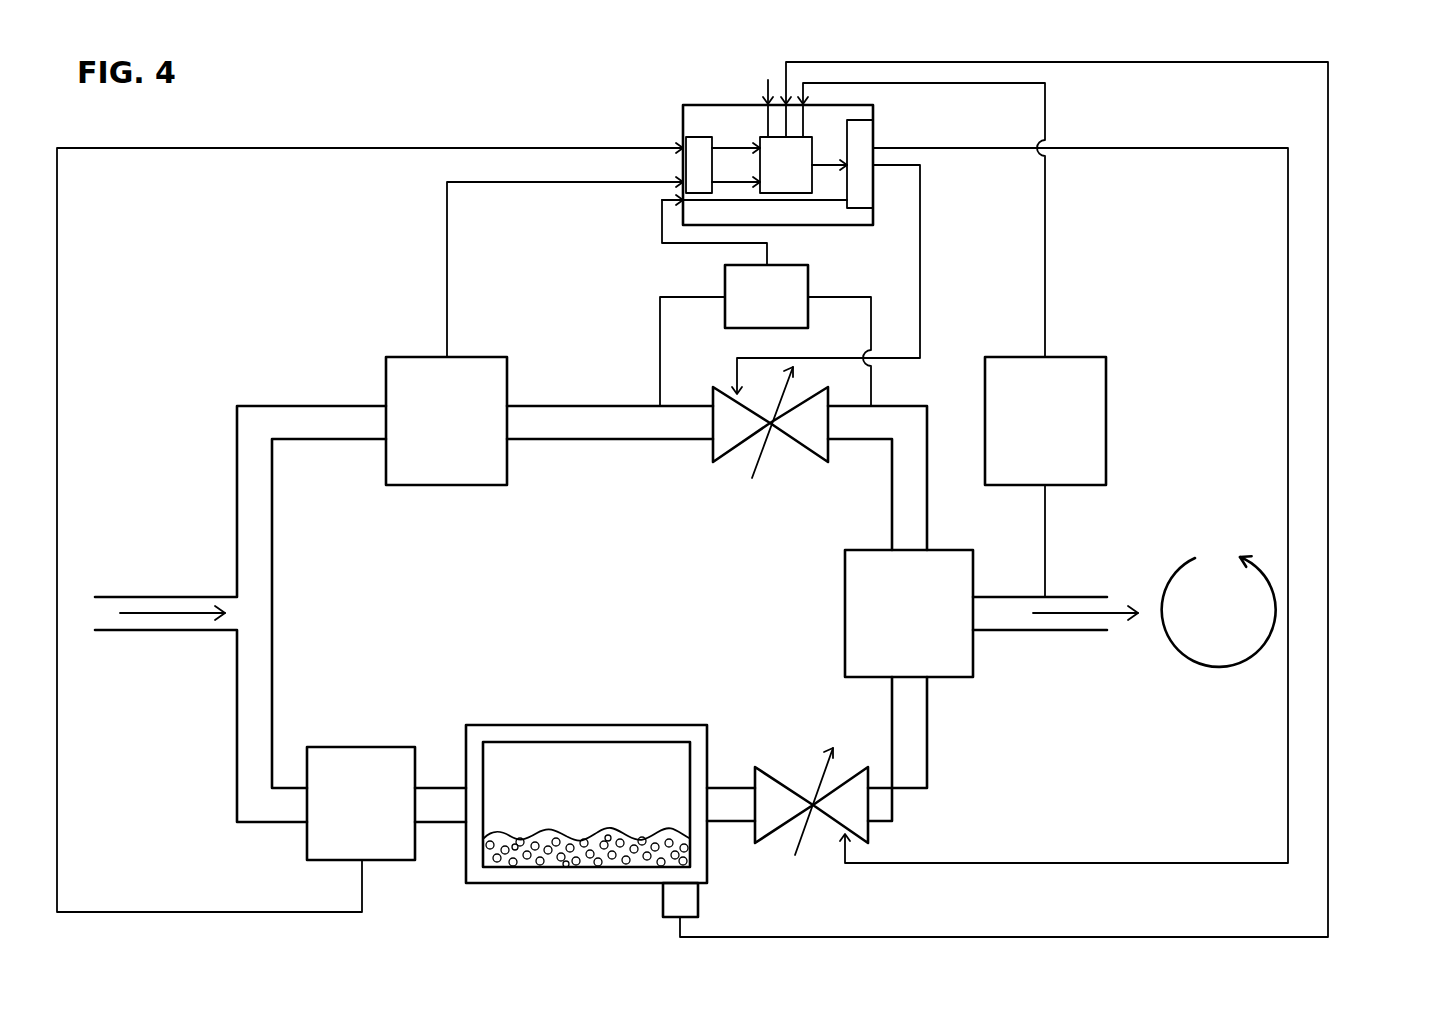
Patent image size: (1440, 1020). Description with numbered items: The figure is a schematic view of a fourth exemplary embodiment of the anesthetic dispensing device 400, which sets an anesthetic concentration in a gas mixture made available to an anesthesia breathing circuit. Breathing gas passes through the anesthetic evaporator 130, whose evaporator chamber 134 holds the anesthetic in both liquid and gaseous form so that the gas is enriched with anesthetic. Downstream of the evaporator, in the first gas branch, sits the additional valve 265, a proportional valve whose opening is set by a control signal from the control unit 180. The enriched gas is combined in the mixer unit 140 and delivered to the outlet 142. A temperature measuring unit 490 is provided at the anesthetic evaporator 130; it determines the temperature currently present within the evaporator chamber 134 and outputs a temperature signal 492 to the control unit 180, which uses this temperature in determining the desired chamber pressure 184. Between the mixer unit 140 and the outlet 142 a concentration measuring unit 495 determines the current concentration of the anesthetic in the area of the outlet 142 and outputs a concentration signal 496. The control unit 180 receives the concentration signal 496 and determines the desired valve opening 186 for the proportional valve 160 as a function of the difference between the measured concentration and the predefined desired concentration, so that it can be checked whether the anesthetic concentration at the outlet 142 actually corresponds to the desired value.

The anesthetic dispensing device 400 is at (743, 487).
The control unit 180 is at (806, 130).
The desired chamber pressure 184 is at (827, 160).
The desired valve opening 186 is at (922, 250).
The concentration signal 496 is at (1045, 277).
The concentration measuring unit 495 is at (1066, 433).
The mixer unit 140 is at (931, 627).
The outlet 142 is at (1100, 632).
The proportional valve 160 is at (728, 450).
The additional valve 265 is at (782, 780).
The anesthetic evaporator 130 is at (475, 862).
The evaporator chamber 134 is at (527, 810).
The temperature measuring unit 490 is at (663, 897).
The temperature signal 492 is at (1117, 937).